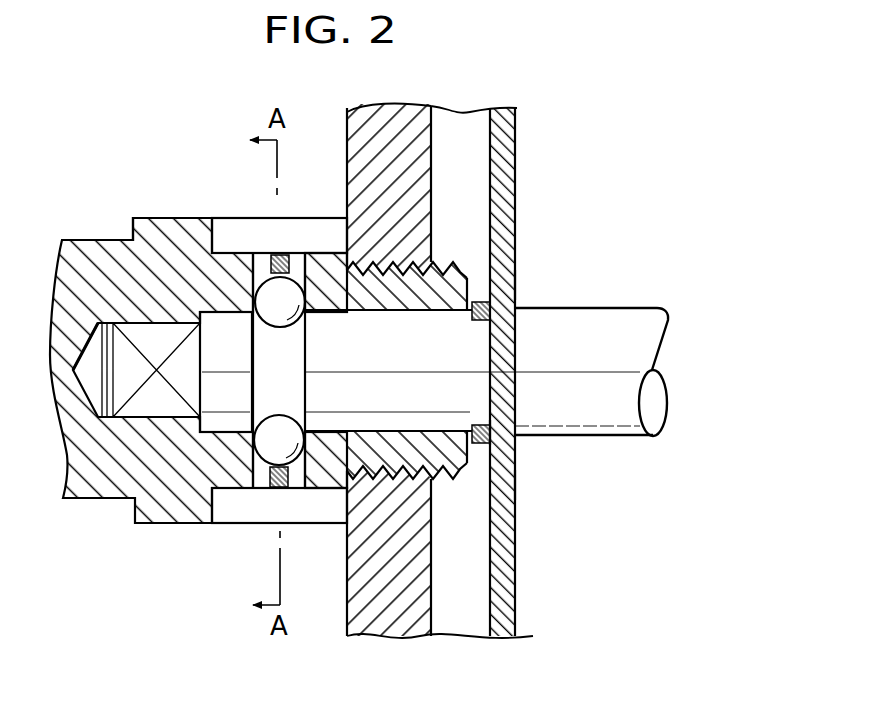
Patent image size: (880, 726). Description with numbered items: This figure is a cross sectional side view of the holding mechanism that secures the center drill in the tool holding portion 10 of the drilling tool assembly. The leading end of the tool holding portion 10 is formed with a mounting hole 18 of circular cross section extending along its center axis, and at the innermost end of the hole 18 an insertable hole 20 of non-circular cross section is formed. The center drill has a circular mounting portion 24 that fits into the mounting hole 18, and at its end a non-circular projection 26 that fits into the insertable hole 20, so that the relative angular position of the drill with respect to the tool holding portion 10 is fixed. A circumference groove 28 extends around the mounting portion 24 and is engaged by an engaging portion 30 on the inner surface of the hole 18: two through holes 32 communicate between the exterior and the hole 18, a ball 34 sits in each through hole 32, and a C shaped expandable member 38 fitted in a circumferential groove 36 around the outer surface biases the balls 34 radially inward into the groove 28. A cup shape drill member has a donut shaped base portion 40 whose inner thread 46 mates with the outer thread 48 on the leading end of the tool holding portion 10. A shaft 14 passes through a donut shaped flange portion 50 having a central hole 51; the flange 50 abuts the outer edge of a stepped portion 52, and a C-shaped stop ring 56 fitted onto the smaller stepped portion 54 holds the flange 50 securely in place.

The tool holding portion 10 is at (117, 236).
The shaft 14 is at (598, 312).
The mounting hole 18 is at (366, 428).
The insertable hole 20 is at (83, 295).
The mounting portion 24 is at (437, 413).
The projection 26 is at (140, 405).
The circumference groove 28 is at (267, 390).
The engaging portion 30 is at (245, 227).
The through holes 32 is at (181, 233).
The ball 34 is at (316, 254).
The circumferential groove 36 is at (275, 254).
The C shaped expandable member 38 is at (280, 490).
The base portion 40 is at (347, 131).
The inner thread 46 is at (403, 467).
The outer thread 48 is at (433, 267).
The flange portion 50 is at (508, 163).
The hole 51 is at (503, 430).
The stepped portion 52 is at (515, 288).
The stepped portion 54 is at (485, 405).
The C-shaped stop ring 56 is at (517, 487).